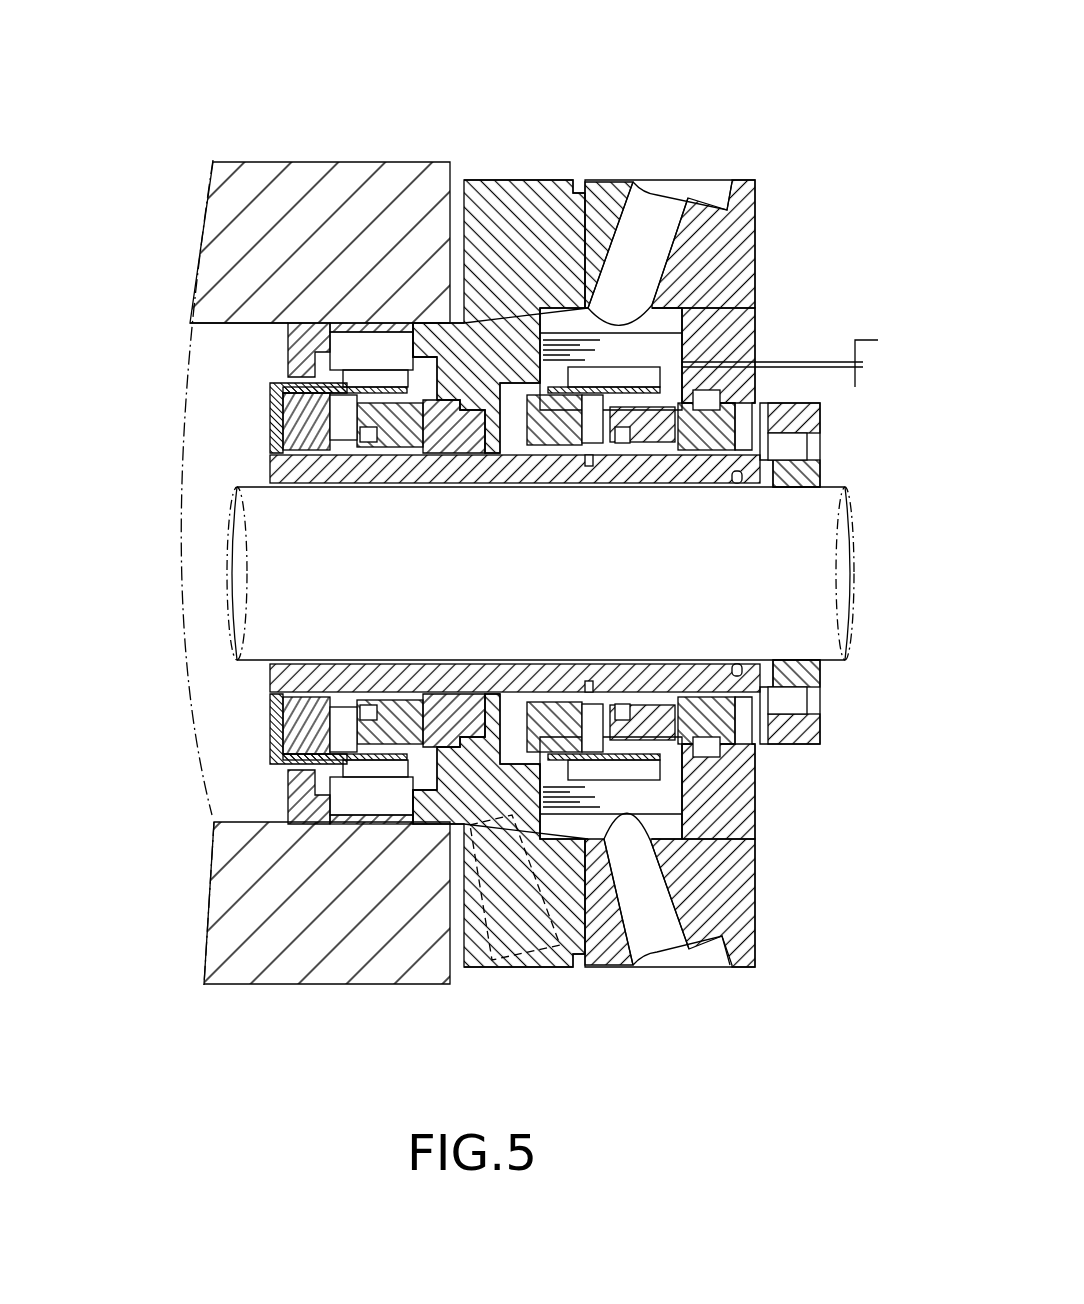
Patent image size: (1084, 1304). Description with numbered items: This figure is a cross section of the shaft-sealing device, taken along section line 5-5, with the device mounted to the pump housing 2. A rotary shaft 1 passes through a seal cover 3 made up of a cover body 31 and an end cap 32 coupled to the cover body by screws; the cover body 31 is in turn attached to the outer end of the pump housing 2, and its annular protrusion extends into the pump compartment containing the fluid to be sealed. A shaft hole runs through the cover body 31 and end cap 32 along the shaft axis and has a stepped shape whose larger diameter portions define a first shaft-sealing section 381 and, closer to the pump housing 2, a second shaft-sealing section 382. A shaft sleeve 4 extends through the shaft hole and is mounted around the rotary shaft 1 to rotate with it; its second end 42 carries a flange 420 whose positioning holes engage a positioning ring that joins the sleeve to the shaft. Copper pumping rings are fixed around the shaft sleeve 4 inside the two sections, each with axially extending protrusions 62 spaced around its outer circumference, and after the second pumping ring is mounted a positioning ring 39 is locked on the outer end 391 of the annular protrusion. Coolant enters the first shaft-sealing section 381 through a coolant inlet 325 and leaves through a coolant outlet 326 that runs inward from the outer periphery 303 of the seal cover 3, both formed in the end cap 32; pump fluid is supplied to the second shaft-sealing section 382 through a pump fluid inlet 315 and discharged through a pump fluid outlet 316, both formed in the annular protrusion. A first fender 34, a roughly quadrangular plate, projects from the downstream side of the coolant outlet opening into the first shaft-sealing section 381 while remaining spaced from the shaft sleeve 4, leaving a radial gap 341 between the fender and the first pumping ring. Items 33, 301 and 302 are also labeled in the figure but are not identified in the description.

The rotary shaft 1 is at (830, 634).
The pump housing 2 is at (338, 963).
The seal cover 3 is at (662, 233).
The shaft sleeve 4 is at (655, 470).
The collar 5 is at (357, 415).
The cover body 31 is at (546, 205).
The end cap 32 is at (747, 228).
The seal ring 33 is at (467, 417).
The first fender 34 is at (720, 342).
The positioning ring 39 is at (290, 347).
The second end 42 is at (836, 599).
The protrusions 62 is at (363, 380).
The inner peripheral surface 301 is at (682, 308).
The accommodating recess 302 is at (405, 342).
The outer periphery 303 is at (633, 182).
The pump fluid inlet 315 is at (484, 962).
The pump fluid outlet 316 is at (410, 332).
The coolant inlet 325 is at (660, 903).
The coolant outlet 326 is at (658, 228).
The gap 341 is at (806, 356).
The first shaft-sealing section 381 is at (567, 323).
The second shaft-sealing section 382 is at (353, 343).
The outer end 391 is at (312, 323).
The flange 420 is at (797, 728).